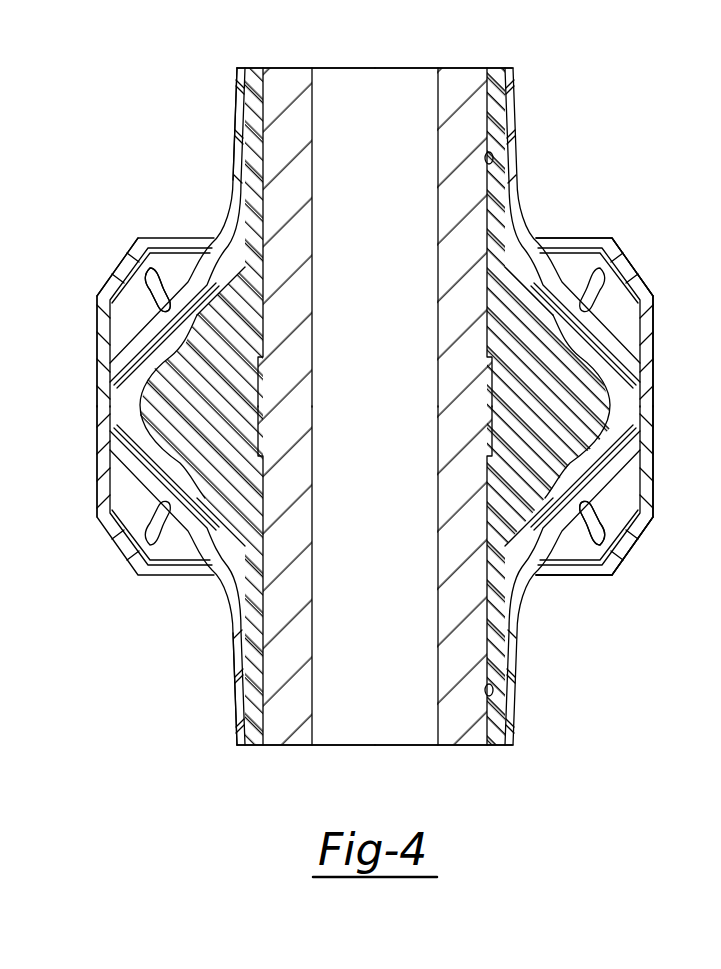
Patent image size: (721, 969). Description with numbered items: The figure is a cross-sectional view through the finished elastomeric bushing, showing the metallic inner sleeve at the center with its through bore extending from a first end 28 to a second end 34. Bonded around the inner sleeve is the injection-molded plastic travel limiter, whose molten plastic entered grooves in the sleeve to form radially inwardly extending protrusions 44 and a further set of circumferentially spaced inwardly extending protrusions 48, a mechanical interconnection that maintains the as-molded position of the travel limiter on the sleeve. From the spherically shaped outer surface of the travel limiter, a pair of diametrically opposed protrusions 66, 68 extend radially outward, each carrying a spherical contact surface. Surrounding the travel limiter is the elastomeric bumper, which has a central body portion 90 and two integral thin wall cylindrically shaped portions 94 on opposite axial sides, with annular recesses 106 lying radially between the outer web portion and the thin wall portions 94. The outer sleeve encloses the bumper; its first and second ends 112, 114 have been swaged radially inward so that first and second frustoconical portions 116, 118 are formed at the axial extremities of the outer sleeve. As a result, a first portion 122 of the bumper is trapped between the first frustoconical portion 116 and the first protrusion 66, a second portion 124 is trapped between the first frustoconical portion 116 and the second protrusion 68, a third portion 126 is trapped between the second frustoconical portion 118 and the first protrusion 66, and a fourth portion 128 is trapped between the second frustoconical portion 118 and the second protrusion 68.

The first end 28 is at (232, 88).
The second end 34 is at (230, 730).
The thin wall substantially cylindrically shaped portions 94 is at (238, 121).
The radially inwardly extending protrusions 44 is at (493, 158).
The circumferentially spaced apart and inwardly extending protrusions 48 is at (493, 690).
The first protrusion 66 is at (160, 402).
The second protrusion 68 is at (590, 393).
The annular recesses 106 is at (156, 292).
The first portion 122 is at (138, 296).
The central body portion 90 is at (126, 342).
The third portion 126 is at (138, 487).
The first end 112 is at (604, 232).
The first frustoconical portion 116 is at (618, 266).
The second portion 124 is at (626, 320).
The fourth portion 128 is at (620, 476).
The second frustoconical portion 118 is at (637, 524).
The second end 114 is at (615, 598).